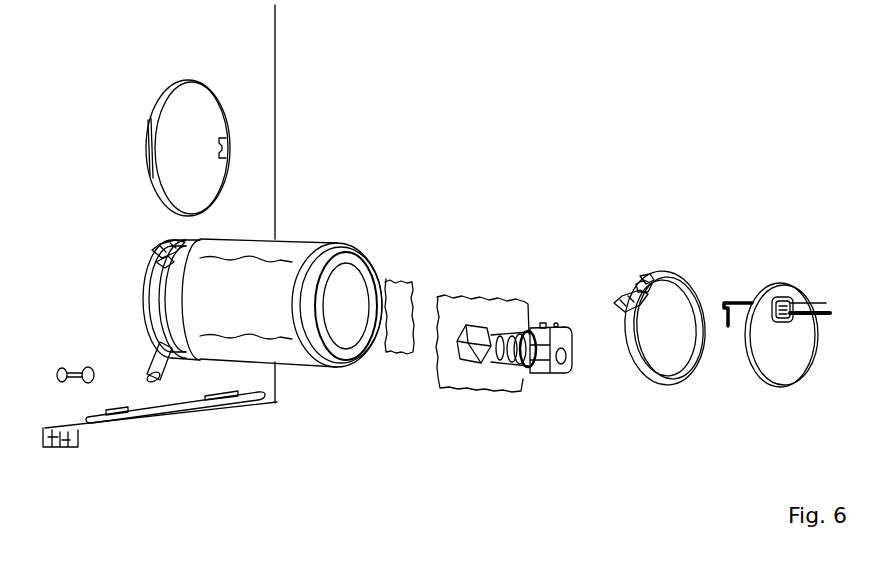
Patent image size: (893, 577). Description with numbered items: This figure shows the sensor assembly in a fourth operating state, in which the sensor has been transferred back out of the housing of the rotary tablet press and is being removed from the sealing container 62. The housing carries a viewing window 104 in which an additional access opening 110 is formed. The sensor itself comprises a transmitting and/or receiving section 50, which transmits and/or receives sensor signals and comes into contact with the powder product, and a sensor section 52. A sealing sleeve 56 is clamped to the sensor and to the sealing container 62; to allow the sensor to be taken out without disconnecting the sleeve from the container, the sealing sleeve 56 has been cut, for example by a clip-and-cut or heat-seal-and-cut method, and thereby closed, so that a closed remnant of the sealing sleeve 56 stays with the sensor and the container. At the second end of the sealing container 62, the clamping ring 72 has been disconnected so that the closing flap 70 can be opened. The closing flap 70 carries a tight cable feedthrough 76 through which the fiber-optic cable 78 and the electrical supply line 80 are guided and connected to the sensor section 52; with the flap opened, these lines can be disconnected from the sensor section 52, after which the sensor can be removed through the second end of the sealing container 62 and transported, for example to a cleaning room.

The viewing window 104 is at (257, 53).
The additional access opening 110 is at (203, 108).
The sealing container 62 is at (297, 240).
The sealing sleeve 56 is at (399, 280).
The transmitting and/or receiving section 50 is at (487, 358).
The sensor section 52 is at (542, 372).
The clamping ring 72 is at (668, 272).
The closing flap 70 is at (770, 368).
The cable feedthrough 76 is at (782, 297).
The electrical supply line 80 is at (823, 300).
The fiber-optic cable 78 is at (829, 318).